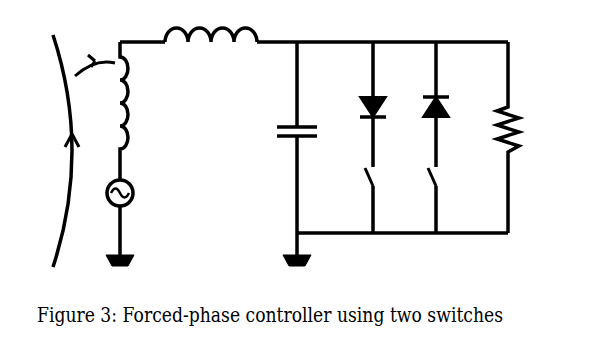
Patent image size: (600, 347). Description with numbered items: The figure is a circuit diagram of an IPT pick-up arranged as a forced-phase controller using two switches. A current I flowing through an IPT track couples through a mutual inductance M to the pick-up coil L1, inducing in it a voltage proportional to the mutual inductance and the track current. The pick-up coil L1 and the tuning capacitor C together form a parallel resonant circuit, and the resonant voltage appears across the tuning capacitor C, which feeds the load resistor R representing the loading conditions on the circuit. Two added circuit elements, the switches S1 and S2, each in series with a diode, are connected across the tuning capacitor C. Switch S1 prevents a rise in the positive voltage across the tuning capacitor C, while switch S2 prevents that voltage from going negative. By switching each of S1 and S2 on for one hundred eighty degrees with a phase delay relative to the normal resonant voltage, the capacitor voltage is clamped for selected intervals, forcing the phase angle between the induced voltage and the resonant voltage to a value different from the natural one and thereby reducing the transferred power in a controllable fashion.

The track current I is at (62, 151).
The mutual inductance M is at (95, 56).
The pick-up coil L1 is at (211, 53).
The tuning capacitor C is at (285, 154).
The switch S1 is at (381, 137).
The switch S2 is at (444, 137).
The load resistor R is at (536, 137).